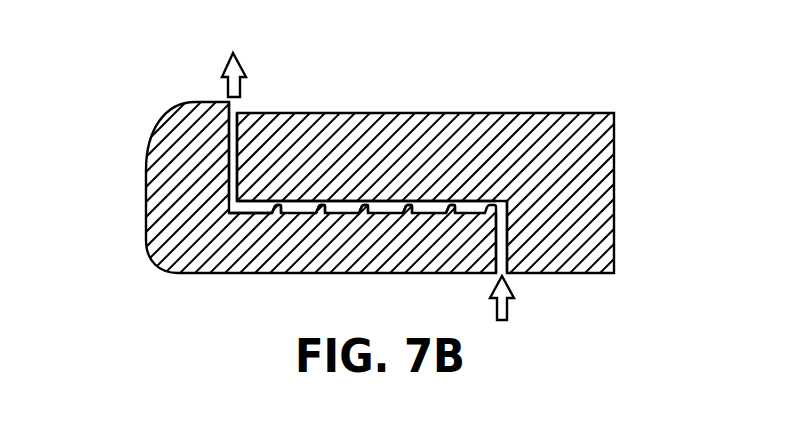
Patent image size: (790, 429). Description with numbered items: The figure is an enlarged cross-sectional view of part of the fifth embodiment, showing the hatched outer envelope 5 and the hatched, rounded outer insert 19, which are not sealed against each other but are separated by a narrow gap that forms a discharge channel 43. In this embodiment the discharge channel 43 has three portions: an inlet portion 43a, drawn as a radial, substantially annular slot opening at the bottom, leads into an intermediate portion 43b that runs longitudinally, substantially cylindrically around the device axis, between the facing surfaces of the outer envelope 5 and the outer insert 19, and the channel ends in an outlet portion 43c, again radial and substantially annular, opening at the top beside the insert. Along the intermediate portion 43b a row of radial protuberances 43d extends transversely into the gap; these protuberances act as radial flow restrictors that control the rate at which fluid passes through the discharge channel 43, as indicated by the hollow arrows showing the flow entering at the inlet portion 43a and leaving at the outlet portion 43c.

The outer envelope 5 is at (562, 133).
The outer insert 19 is at (183, 149).
The discharge channel 43 is at (216, 208).
The inlet portion 43a is at (510, 274).
The intermediate portion 43b is at (349, 195).
The outlet portion 43c is at (224, 114).
The radial protuberances 43d is at (453, 203).